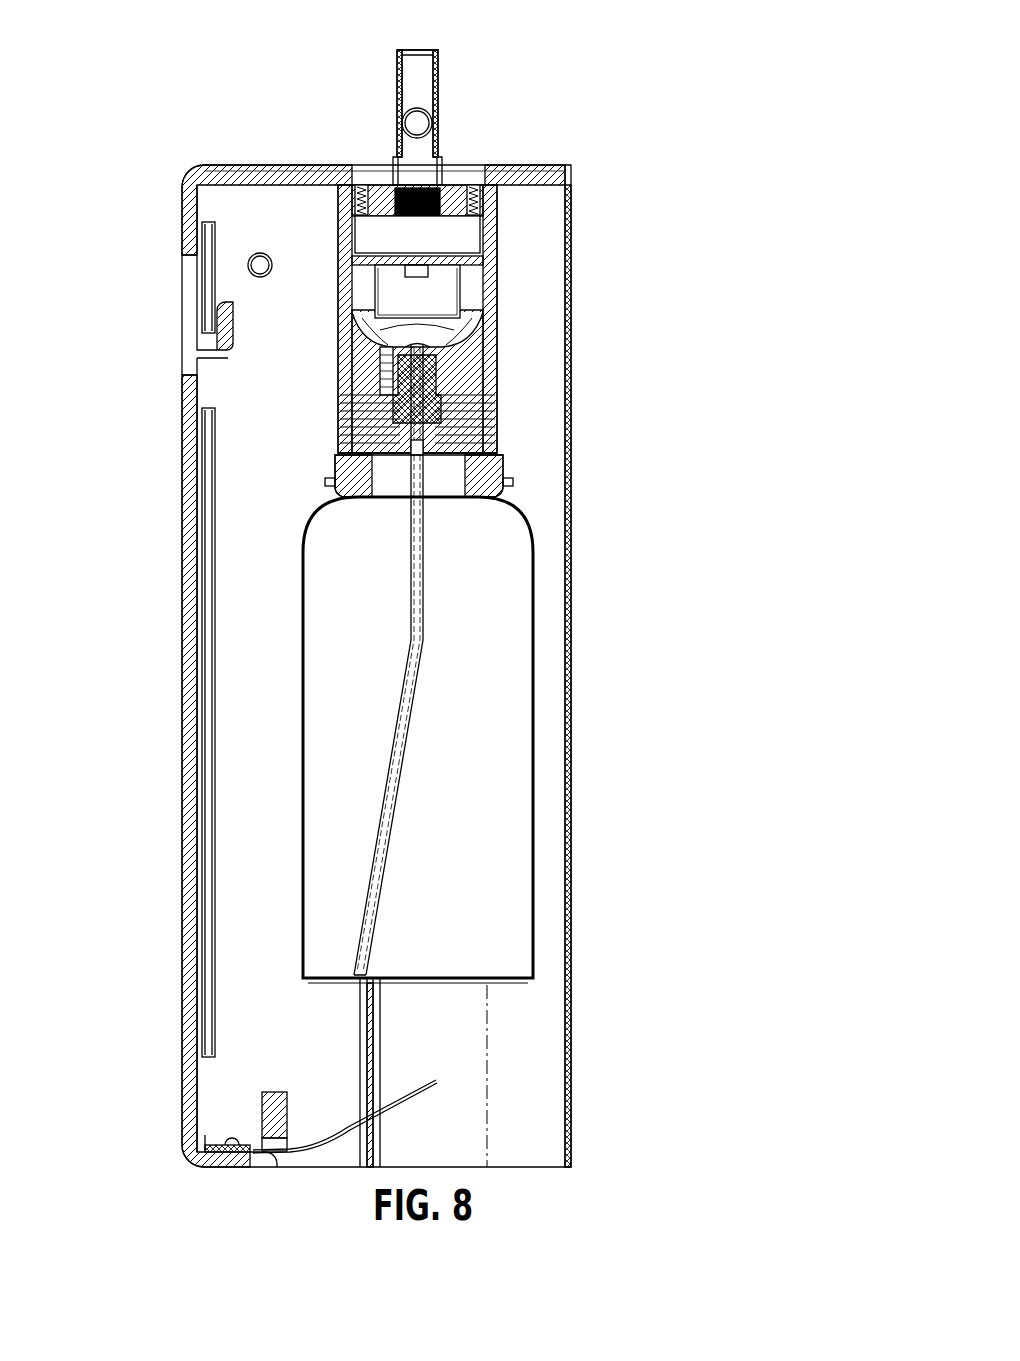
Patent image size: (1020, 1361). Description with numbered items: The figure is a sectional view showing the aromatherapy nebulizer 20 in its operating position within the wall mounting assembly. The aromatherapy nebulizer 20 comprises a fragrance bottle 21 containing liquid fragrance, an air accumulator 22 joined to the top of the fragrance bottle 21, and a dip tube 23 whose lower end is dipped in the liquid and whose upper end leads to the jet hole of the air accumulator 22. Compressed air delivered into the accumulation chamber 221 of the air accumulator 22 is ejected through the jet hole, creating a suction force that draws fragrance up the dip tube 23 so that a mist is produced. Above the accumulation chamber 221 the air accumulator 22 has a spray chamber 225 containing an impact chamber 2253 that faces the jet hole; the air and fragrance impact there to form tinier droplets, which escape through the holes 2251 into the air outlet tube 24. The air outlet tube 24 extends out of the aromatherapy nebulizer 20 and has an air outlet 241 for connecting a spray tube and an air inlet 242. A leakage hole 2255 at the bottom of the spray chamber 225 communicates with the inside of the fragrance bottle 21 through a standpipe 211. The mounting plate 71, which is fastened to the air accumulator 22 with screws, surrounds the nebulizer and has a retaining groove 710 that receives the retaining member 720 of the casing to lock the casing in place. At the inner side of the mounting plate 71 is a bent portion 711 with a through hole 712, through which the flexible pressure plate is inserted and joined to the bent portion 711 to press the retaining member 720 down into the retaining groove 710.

The aromatherapy nebulizer 20 is at (725, 63).
The fragrance bottle 21 is at (460, 709).
The air accumulator 22 is at (497, 372).
The dip tube 23 is at (424, 539).
The air outlet tube 24 is at (440, 78).
The air outlet 241 is at (418, 50).
The air inlet 242 is at (405, 112).
The standpipe 211 is at (342, 437).
The accumulation chamber 221 is at (337, 370).
The spray chamber 225 is at (470, 345).
The holes 2251 is at (343, 242).
The impact chamber 2253 is at (432, 302).
The leakage hole 2255 is at (387, 345).
The mounting plate 71 is at (185, 1086).
The retaining groove 710 is at (217, 342).
The bent portion 711 is at (233, 1162).
The through hole 712 is at (263, 1160).
The retaining member 720 is at (210, 293).